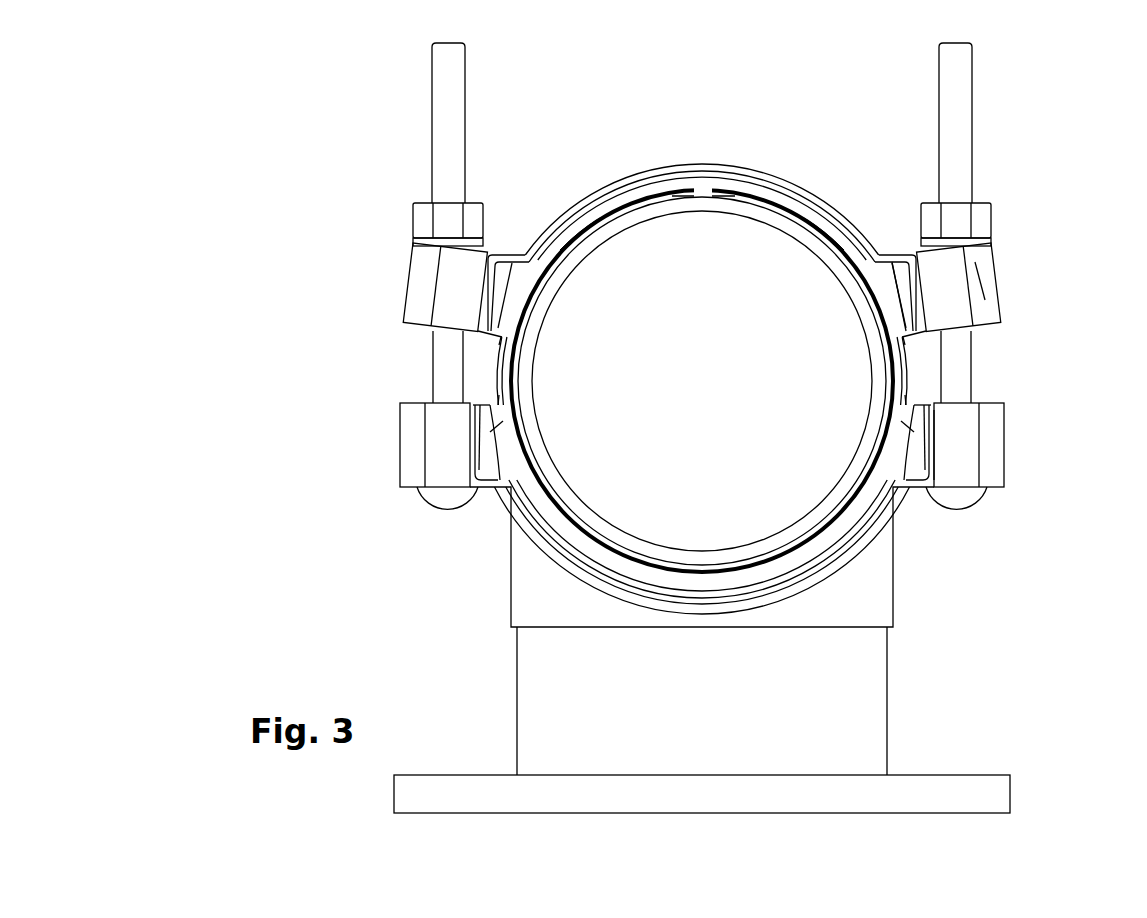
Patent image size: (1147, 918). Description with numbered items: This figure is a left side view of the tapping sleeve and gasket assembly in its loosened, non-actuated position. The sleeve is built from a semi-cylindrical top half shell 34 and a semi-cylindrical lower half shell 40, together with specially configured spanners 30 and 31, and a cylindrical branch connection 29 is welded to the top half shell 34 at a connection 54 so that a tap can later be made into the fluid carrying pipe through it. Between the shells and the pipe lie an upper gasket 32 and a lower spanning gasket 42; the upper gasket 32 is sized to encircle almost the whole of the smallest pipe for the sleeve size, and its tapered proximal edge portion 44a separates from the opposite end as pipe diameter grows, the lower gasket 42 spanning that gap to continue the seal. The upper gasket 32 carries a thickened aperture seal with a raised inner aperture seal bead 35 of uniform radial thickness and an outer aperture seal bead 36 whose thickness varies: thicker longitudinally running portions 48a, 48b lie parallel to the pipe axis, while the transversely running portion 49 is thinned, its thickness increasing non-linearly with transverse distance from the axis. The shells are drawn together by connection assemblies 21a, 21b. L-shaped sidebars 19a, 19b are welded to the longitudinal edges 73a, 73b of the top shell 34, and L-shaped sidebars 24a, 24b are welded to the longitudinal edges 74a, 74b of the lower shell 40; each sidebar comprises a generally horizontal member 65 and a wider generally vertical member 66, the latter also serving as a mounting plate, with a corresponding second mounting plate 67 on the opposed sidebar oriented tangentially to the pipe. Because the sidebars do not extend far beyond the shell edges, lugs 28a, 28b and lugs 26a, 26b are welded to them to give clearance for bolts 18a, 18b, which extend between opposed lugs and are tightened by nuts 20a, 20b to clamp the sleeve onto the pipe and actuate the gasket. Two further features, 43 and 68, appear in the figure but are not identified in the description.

The bolt 18a is at (433, 116).
The bolt 18b is at (971, 118).
The L-shaped sidebar 19a is at (472, 488).
The L-shaped sidebar 19b is at (937, 487).
The nut 20a is at (413, 221).
The nut 20b is at (991, 222).
The connection assembly 21a is at (418, 353).
The connection assembly 21b is at (986, 346).
The L-shaped sidebar 24a is at (485, 266).
The L-shaped sidebar 24b is at (923, 270).
The bolt receiving lug 26a is at (420, 297).
The bolt receiving lug 26b is at (990, 317).
The bolt receiving lug 28a is at (418, 446).
The bolt receiving lug 28b is at (990, 473).
The branch connection 29 is at (845, 700).
The spanner 30 is at (498, 378).
The spanner 31 is at (912, 373).
The upper gasket 32 is at (818, 550).
The top half shell 34 is at (527, 537).
The inner aperture seal bead 35 is at (707, 566).
The outer aperture seal bead 36 is at (650, 590).
The lower half shell 40 is at (635, 177).
The lower spanning gasket 42 is at (682, 180).
The gasket gap 43 is at (708, 187).
The tapered proximal edge portion 44a is at (605, 215).
The longitudinally running portion 48a is at (520, 492).
The longitudinally running portion 48b is at (898, 508).
The transversely running portion 49 is at (615, 573).
The connection 54 is at (867, 513).
The horizontal member 65 is at (908, 483).
The vertical member 66 is at (930, 447).
The second mounting plate 67 is at (987, 300).
The lug edge 68 is at (893, 260).
The longitudinal edge 73a is at (498, 340).
The longitudinal edge 73b is at (906, 340).
The longitudinal edge 74a is at (498, 398).
The longitudinal edge 74b is at (906, 398).